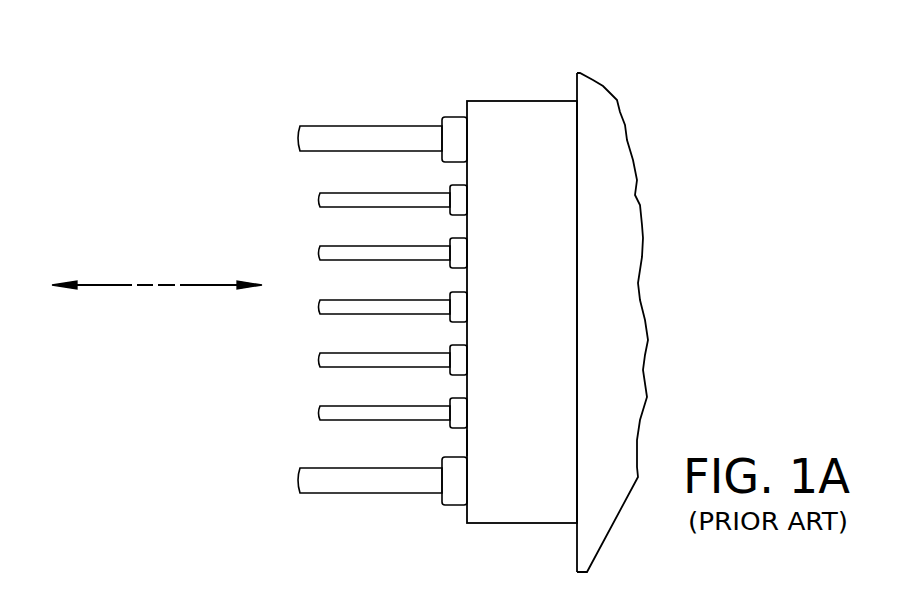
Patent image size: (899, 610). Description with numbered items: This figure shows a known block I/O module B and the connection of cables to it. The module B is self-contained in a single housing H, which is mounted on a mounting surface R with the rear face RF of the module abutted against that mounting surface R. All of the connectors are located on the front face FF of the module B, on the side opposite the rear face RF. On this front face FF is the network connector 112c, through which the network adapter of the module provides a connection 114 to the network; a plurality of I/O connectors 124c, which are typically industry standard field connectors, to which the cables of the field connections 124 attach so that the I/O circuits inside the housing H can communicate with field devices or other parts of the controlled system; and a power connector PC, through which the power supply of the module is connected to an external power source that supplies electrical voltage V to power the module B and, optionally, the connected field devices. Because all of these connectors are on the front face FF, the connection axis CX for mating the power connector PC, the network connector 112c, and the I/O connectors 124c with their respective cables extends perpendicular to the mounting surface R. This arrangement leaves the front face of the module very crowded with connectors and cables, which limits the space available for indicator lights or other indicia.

The block I/O module B is at (463, 296).
The housing H is at (555, 252).
The rear face RF is at (577, 297).
The mounting surface R is at (603, 363).
The connection 114 is at (352, 126).
The network connector 112c is at (455, 116).
The field connections 124 is at (333, 207).
The I/O connectors 124c is at (457, 307).
The electrical voltage V is at (380, 493).
The power connector PC is at (448, 507).
The front face FF is at (465, 440).
The connection axis CX is at (183, 287).